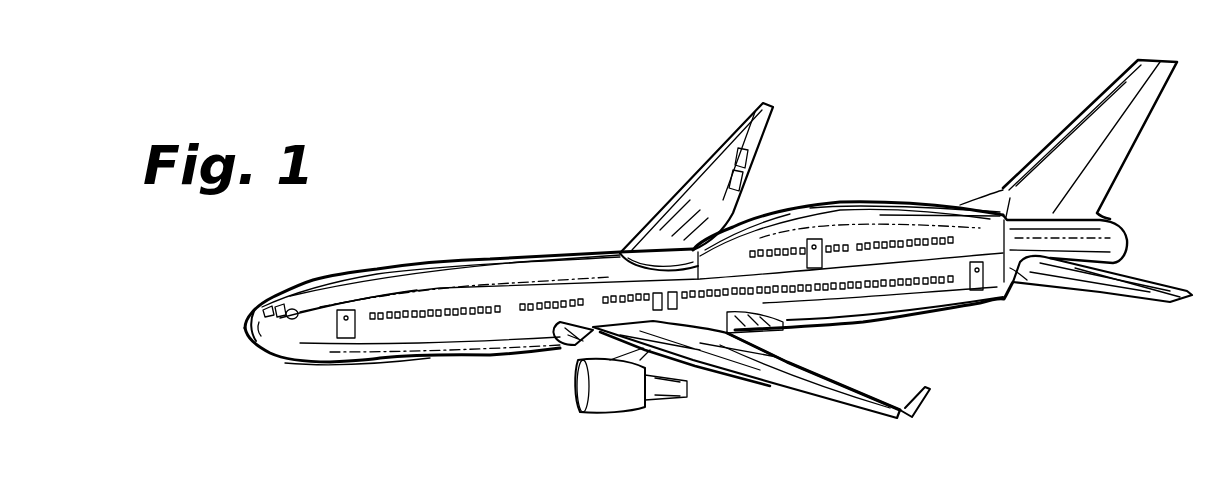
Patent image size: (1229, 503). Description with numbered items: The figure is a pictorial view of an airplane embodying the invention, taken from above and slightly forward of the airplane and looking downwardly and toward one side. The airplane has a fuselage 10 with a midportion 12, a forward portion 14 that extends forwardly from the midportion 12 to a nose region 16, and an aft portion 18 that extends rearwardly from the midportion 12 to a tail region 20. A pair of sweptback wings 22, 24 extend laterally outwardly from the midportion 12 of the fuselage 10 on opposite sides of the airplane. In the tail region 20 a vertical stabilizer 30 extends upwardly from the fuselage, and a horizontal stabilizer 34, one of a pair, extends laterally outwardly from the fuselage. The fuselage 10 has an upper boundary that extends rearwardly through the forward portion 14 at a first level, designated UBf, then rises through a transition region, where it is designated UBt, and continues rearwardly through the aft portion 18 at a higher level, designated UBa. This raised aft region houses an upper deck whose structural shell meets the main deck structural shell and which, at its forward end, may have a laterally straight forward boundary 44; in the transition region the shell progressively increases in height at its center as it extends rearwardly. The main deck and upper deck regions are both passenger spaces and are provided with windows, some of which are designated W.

The fuselage 10 is at (679, 260).
The midportion 12 is at (585, 285).
The forward portion 14 is at (403, 280).
The nose region 16 is at (240, 343).
The aft portion 18 is at (927, 195).
The tail region 20 is at (1107, 211).
The sweptback wing 22 is at (717, 157).
The sweptback wing 24 is at (790, 378).
The vertical stabilizer 30 is at (1103, 120).
The horizontal stabilizer 34 is at (1110, 277).
The forward boundary 44 is at (620, 253).
The upper boundary in the forward portion UBf is at (522, 258).
The upper boundary in the transition region UBt is at (753, 204).
The upper boundary in the aft portion UBa is at (895, 200).
The windows W is at (410, 325).